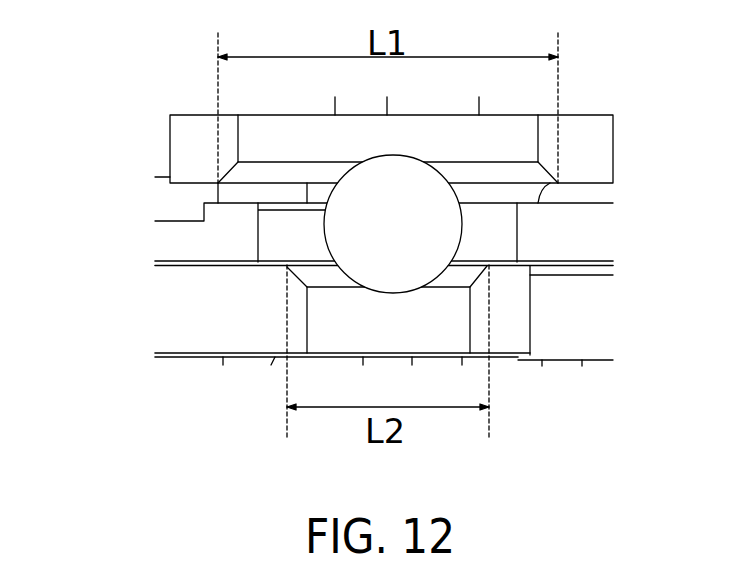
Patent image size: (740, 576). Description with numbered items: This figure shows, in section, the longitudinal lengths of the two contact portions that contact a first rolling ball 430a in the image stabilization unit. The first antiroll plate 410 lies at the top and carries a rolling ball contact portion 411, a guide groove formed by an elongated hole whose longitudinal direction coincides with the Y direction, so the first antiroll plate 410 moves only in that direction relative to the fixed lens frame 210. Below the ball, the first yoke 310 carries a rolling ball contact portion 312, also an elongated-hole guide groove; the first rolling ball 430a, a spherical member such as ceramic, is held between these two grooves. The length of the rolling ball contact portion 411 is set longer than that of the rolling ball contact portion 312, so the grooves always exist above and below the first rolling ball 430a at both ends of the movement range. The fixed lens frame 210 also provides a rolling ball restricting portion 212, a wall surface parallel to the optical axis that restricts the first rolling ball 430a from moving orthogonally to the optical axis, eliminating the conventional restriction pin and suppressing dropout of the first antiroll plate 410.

The first antiroll plate 410 is at (183, 153).
The rolling ball contact portion (second groove) 411 is at (533, 173).
The rolling ball restricting portion 212 is at (523, 228).
The first rolling ball (rolling member) 430a is at (373, 237).
The rolling ball contact portion (first groove) 312 is at (303, 273).
The first yoke 310 is at (192, 340).
The fixed lens frame 210 is at (548, 240).